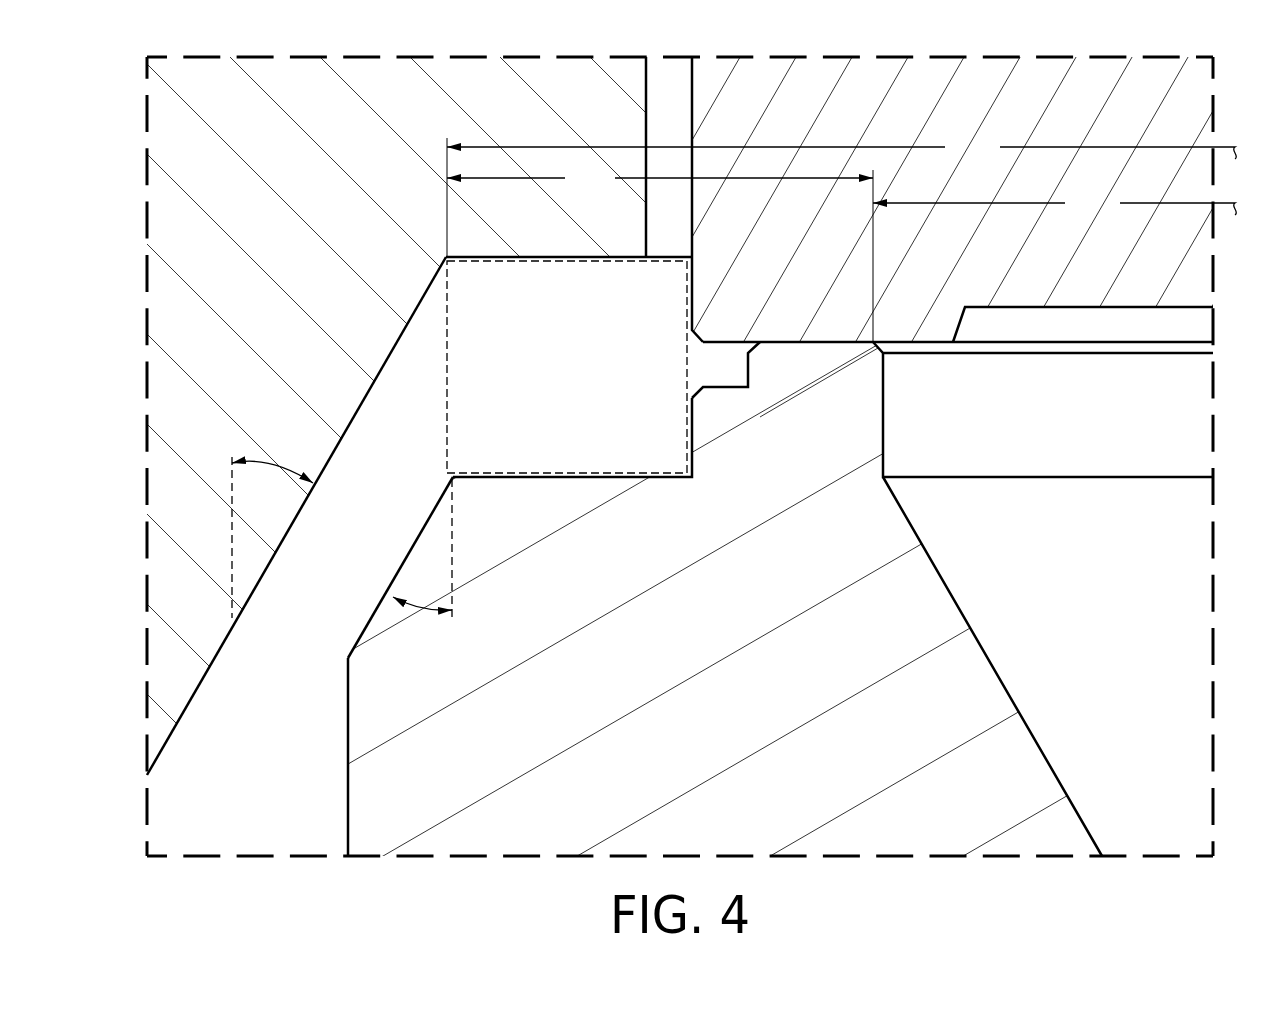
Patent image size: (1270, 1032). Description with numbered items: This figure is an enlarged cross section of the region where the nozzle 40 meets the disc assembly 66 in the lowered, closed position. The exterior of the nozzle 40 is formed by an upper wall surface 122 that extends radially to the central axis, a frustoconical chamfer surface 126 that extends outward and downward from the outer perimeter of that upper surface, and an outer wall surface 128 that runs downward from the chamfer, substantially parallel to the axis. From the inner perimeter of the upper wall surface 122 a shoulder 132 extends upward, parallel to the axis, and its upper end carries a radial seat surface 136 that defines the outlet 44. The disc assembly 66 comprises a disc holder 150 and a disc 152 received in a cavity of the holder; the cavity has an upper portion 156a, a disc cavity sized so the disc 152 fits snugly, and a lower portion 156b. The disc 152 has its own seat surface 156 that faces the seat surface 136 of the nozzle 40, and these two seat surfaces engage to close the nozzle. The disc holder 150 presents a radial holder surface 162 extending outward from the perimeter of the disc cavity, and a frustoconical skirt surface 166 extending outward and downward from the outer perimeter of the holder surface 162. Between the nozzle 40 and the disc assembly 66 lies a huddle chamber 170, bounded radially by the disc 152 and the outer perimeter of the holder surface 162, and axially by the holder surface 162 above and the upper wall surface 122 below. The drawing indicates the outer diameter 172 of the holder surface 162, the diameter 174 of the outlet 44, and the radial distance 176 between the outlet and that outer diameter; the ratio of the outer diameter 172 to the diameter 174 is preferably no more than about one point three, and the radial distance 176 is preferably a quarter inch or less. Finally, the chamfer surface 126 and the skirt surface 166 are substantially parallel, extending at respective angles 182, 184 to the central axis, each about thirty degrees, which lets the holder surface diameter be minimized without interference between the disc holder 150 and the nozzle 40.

The nozzle 40 is at (348, 795).
The outlet 44 is at (1090, 333).
The disc assembly 66 is at (190, 172).
The upper wall surface 122 is at (638, 472).
The frustoconical chamfer surface 126 is at (417, 535).
The outer wall surface 128 is at (345, 733).
The shoulder 132 is at (885, 410).
The seat surface 136 is at (808, 340).
The disc holder 150 is at (646, 127).
The disc 152 is at (692, 240).
The seat surface 156 is at (835, 344).
The upper portion 156a is at (669, 92).
The lower portion 156b is at (208, 797).
The holder surface 162 is at (498, 262).
The frustoconical skirt surface 166 is at (258, 592).
The huddle chamber 170 is at (447, 432).
The outer diameter 172 is at (841, 195).
The diameter 174 is at (1054, 203).
The radial distance 176 is at (660, 253).
The angle 182 is at (413, 605).
The angle 184 is at (278, 463).